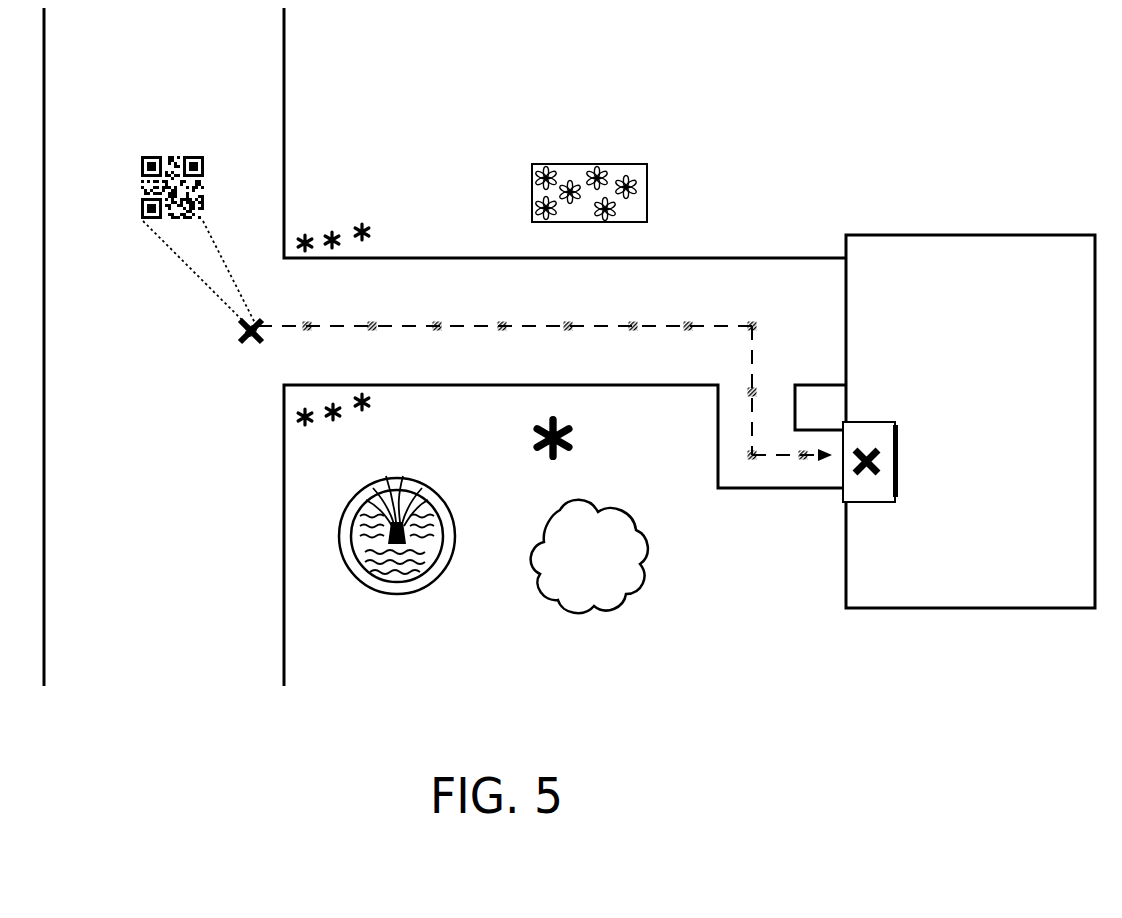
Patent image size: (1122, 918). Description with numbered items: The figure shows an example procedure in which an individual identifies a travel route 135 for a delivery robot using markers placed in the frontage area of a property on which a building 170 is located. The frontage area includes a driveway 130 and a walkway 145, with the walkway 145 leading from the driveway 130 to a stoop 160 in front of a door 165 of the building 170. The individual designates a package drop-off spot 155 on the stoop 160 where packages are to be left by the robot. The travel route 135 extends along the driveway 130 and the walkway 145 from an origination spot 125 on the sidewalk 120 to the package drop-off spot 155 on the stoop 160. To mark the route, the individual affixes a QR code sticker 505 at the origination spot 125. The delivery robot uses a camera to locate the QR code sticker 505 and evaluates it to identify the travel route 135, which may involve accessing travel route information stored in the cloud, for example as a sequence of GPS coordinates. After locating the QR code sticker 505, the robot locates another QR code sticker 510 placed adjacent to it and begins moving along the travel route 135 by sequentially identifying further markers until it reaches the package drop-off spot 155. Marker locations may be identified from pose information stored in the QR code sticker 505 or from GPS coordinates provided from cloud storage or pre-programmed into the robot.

The sidewalk 120 is at (197, 60).
The QR code sticker 505 is at (200, 186).
The origination spot 125 is at (253, 340).
The QR code sticker 510 is at (307, 321).
The driveway 130 is at (449, 292).
The travel route 135 is at (542, 327).
The walkway 145 is at (796, 476).
The package drop-off spot 155 is at (866, 450).
The stoop 160 is at (866, 503).
The door 165 is at (899, 459).
The building 170 is at (1011, 432).